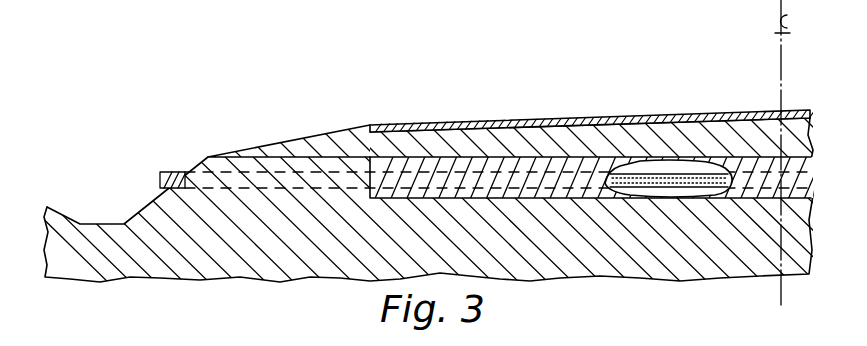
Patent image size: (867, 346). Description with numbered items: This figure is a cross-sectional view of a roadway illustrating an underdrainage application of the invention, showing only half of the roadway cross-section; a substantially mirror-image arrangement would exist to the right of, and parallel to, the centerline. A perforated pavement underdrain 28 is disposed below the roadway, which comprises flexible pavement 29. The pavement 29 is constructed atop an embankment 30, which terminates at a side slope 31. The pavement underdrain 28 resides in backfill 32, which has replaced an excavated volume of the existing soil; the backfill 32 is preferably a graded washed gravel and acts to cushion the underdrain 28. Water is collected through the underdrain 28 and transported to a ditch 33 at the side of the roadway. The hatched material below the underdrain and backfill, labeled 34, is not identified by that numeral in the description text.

The perforated pavement underdrain 28 is at (658, 176).
The flexible pavement 29 is at (421, 127).
The embankment 30 is at (540, 138).
The side slope 31 is at (271, 143).
The backfill 32 is at (387, 200).
The ditch 33 is at (94, 203).
The body 34 is at (695, 257).